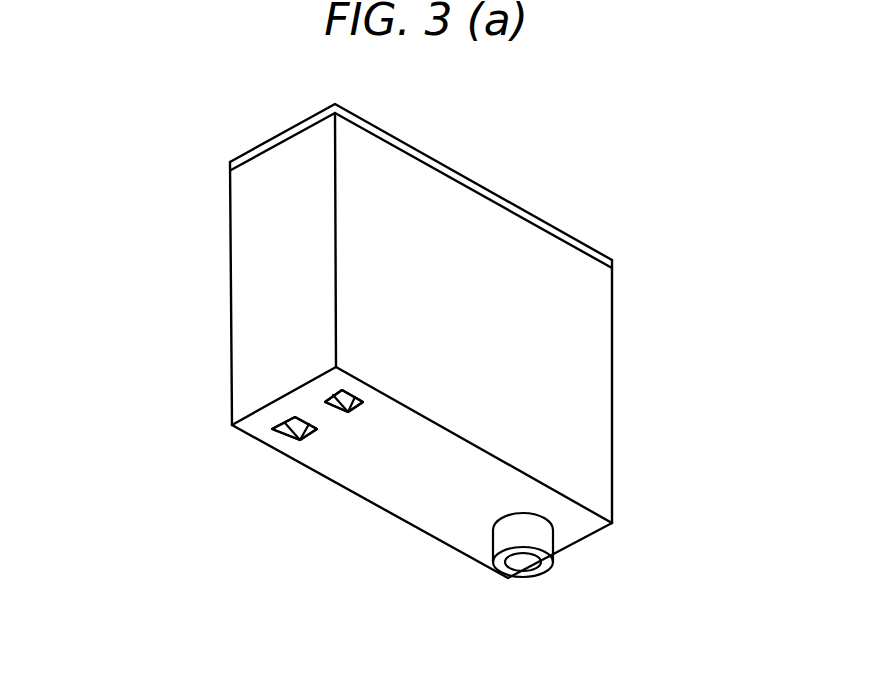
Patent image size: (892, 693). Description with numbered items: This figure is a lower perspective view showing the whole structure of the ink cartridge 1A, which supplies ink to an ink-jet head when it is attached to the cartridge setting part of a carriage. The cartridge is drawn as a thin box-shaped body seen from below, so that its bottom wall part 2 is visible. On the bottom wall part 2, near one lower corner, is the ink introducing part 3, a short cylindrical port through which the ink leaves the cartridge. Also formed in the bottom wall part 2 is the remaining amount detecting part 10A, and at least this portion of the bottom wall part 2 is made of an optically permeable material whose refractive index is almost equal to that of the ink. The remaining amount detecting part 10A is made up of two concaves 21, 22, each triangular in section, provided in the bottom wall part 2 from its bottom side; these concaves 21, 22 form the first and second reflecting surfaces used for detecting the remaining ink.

The ink cartridge 1A is at (618, 388).
The bottom wall part 2 is at (473, 492).
The remaining amount detecting part 10A is at (258, 438).
The concave 21 is at (344, 423).
The concave 22 is at (291, 438).
The ink introducing part 3 is at (525, 562).